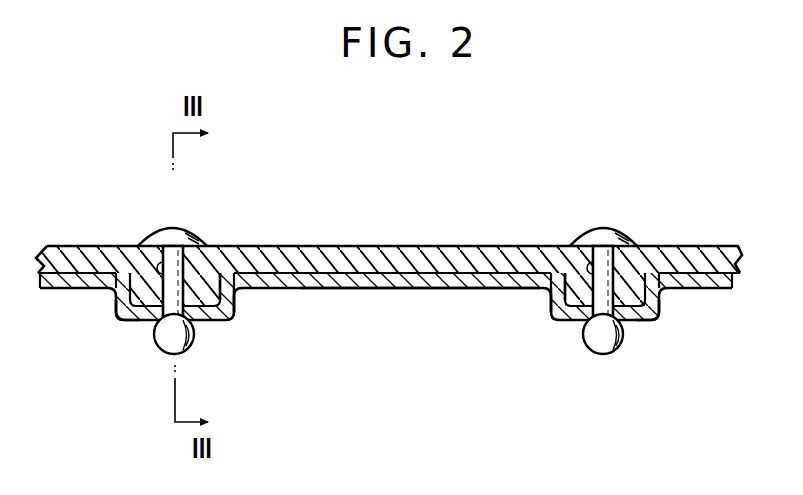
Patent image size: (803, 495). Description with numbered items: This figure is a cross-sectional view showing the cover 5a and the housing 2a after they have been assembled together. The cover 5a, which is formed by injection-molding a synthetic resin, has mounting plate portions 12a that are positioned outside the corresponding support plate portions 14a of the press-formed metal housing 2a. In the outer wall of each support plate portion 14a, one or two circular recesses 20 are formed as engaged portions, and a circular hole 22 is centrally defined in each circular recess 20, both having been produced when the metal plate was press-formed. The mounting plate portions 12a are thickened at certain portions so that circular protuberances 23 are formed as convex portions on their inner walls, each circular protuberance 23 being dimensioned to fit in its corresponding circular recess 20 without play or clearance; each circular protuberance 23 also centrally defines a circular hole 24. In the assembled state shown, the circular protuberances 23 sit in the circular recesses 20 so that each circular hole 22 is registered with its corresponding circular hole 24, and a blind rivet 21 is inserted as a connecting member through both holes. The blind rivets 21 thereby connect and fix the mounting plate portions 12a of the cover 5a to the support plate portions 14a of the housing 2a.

The housing 2a is at (455, 293).
The cover 5a is at (322, 244).
The mounting plate portion 12a is at (366, 247).
The support plate portion 14a is at (390, 289).
The circular recess 20 is at (124, 318).
The blind rivet 21 is at (173, 231).
The circular hole 22 is at (187, 349).
The circular protuberance 23 is at (231, 298).
The circular hole 24 is at (148, 278).